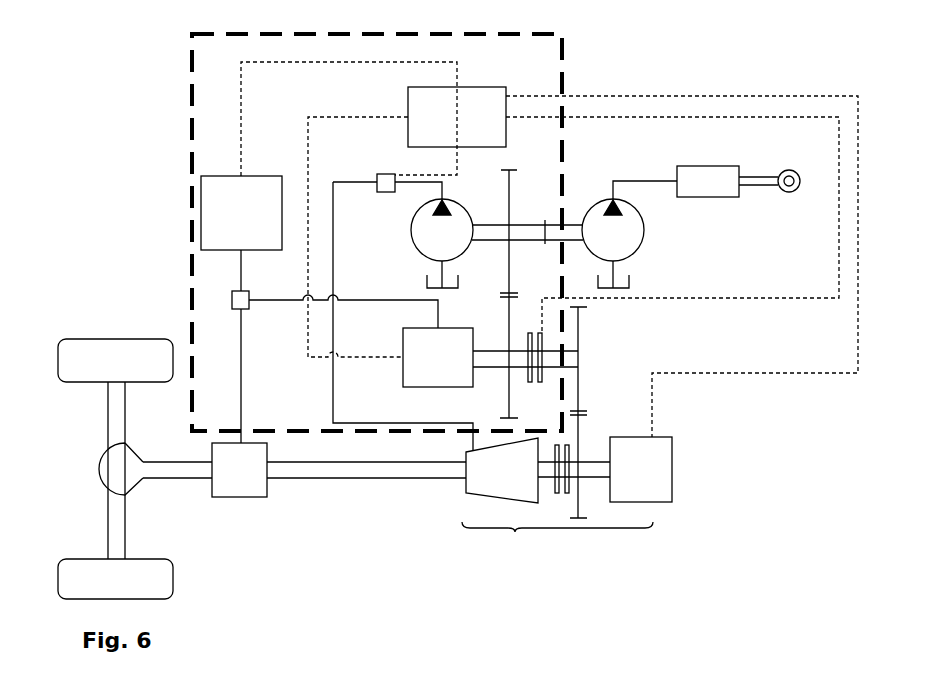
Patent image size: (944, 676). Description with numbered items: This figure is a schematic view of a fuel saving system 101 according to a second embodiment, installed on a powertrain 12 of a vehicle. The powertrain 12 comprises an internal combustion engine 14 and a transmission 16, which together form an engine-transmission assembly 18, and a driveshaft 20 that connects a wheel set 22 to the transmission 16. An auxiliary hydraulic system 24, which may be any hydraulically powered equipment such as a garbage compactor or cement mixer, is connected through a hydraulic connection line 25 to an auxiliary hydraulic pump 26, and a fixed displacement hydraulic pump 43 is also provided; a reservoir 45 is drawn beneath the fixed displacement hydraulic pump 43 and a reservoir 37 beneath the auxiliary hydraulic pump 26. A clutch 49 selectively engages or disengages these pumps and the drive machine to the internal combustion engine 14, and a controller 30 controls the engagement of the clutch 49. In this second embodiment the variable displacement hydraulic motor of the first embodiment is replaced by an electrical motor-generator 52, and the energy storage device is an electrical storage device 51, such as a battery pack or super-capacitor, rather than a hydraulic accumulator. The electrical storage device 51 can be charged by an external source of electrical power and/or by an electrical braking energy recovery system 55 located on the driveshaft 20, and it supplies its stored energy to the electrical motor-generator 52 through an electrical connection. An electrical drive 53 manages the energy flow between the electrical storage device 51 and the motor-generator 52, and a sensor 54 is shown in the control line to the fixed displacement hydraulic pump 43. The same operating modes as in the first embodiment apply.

The fuel saving system 101 is at (563, 63).
The controller 30 is at (457, 117).
The electrical storage device 51 is at (241, 213).
The sensor 54 is at (377, 178).
The electrical drive 53 is at (243, 309).
The fixed displacement hydraulic pump 43 is at (412, 218).
The reservoir 45 is at (426, 282).
The auxiliary hydraulic pump 26 is at (647, 241).
The reservoir 37 is at (630, 281).
The hydraulic connection line 25 is at (643, 177).
The auxiliary hydraulic system 24 is at (732, 197).
The electrical motor-generator 52 is at (438, 357).
The clutch 49 is at (540, 382).
The wheel set 22 is at (83, 559).
The electrical braking energy recovery system 55 is at (238, 497).
The driveshaft 20 is at (352, 478).
The powertrain 12 is at (378, 478).
The transmission 16 is at (468, 490).
The engine-transmission assembly 18 is at (557, 501).
The internal combustion engine 14 is at (675, 503).